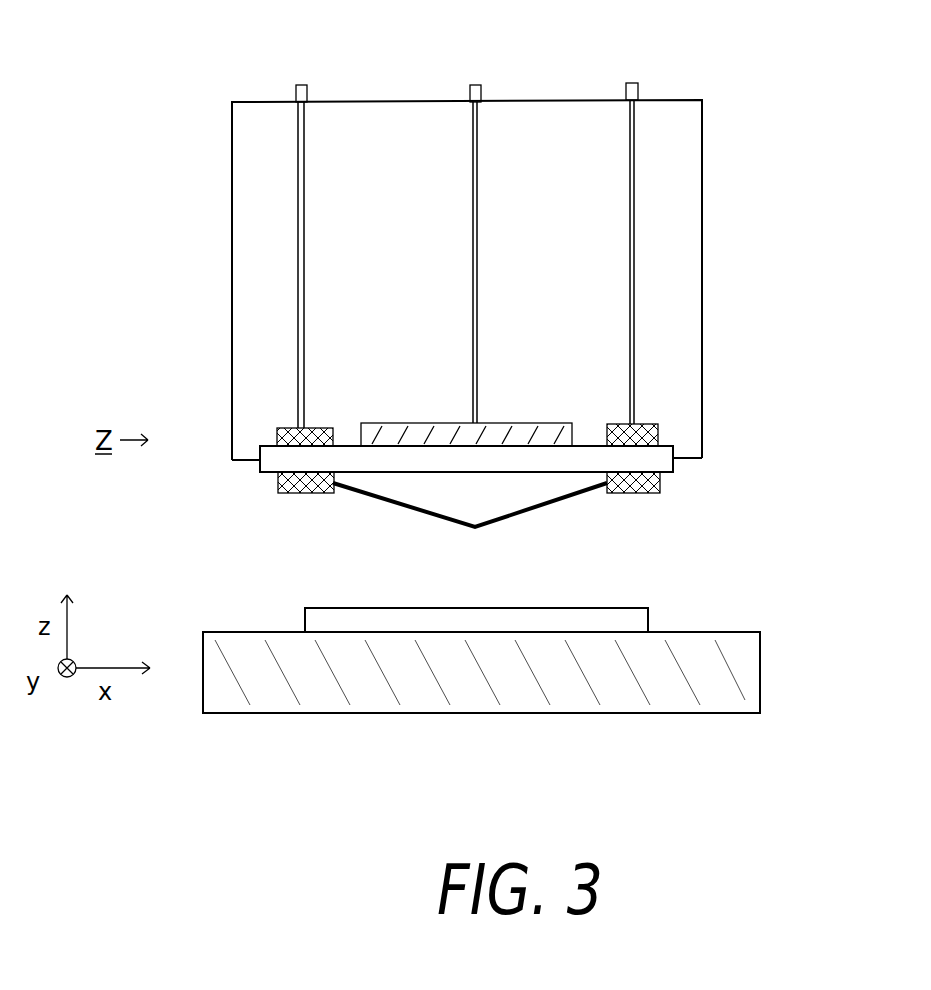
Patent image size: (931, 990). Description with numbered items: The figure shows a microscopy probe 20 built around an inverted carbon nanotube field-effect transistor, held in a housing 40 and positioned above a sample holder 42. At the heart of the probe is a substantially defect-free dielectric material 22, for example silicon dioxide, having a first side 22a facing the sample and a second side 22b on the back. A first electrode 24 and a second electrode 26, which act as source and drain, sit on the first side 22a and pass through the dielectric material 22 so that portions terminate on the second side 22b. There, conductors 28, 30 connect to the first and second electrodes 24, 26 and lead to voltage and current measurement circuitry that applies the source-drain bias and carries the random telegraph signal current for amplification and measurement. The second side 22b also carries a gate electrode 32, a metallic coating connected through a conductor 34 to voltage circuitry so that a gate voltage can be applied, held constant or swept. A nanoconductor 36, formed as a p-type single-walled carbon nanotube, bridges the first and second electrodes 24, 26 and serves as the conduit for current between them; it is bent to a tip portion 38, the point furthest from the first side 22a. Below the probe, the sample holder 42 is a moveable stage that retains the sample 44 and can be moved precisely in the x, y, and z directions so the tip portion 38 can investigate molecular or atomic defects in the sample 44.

The microscopy probe 20 is at (758, 340).
The dielectric material 22 is at (683, 465).
The first side 22a is at (665, 475).
The second side 22b is at (663, 446).
The first electrode 24 is at (278, 490).
The second electrode 26 is at (645, 493).
The conductor 28 is at (298, 272).
The conductor 30 is at (637, 272).
The gate electrode 32 is at (540, 423).
The conductor 34 is at (478, 198).
The nanoconductor 36 is at (380, 500).
The tip portion 38 is at (477, 530).
The housing 40 is at (232, 210).
The sample holder 42 is at (760, 670).
The sample 44 is at (632, 620).